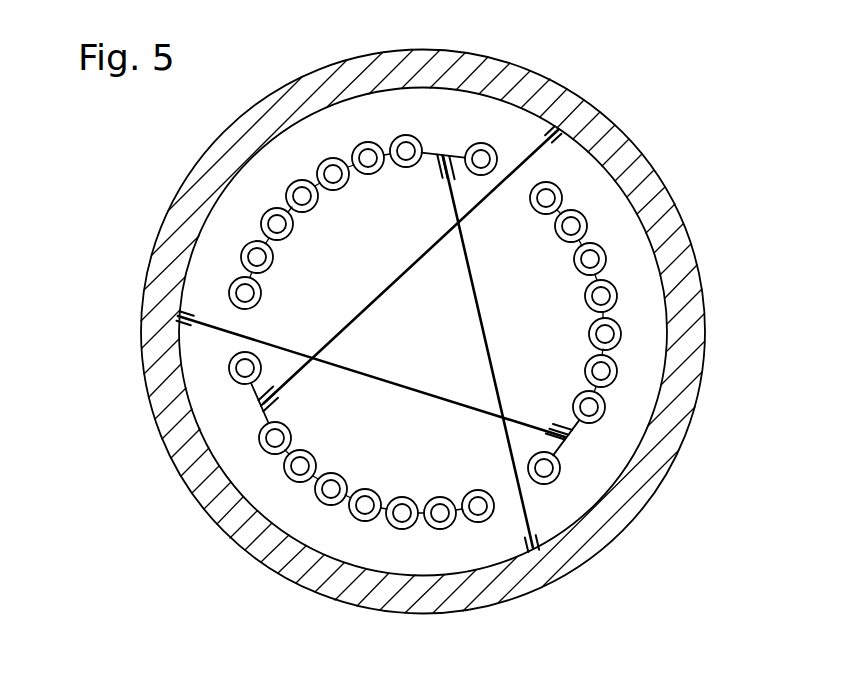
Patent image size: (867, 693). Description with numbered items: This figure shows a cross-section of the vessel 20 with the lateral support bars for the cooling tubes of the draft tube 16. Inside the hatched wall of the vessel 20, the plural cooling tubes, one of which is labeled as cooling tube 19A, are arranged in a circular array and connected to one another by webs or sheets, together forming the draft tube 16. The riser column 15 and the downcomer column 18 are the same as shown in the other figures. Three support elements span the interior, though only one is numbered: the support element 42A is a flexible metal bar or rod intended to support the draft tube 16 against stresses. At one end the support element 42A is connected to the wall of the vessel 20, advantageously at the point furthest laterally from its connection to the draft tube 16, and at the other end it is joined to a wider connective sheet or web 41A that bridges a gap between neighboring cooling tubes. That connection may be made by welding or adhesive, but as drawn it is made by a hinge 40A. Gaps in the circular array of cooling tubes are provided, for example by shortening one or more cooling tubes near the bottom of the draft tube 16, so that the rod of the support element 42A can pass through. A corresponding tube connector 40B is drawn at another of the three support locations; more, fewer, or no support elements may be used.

The vessel 20 is at (143, 388).
The downcomer column 18 is at (618, 240).
The cooling tube 19A is at (622, 289).
The draft tube 16 is at (622, 388).
The support element 42A is at (473, 285).
The connective sheet or web 41A is at (445, 148).
The tube connector 40B is at (428, 175).
The hinge 40A is at (398, 578).
The riser column 15 is at (398, 440).